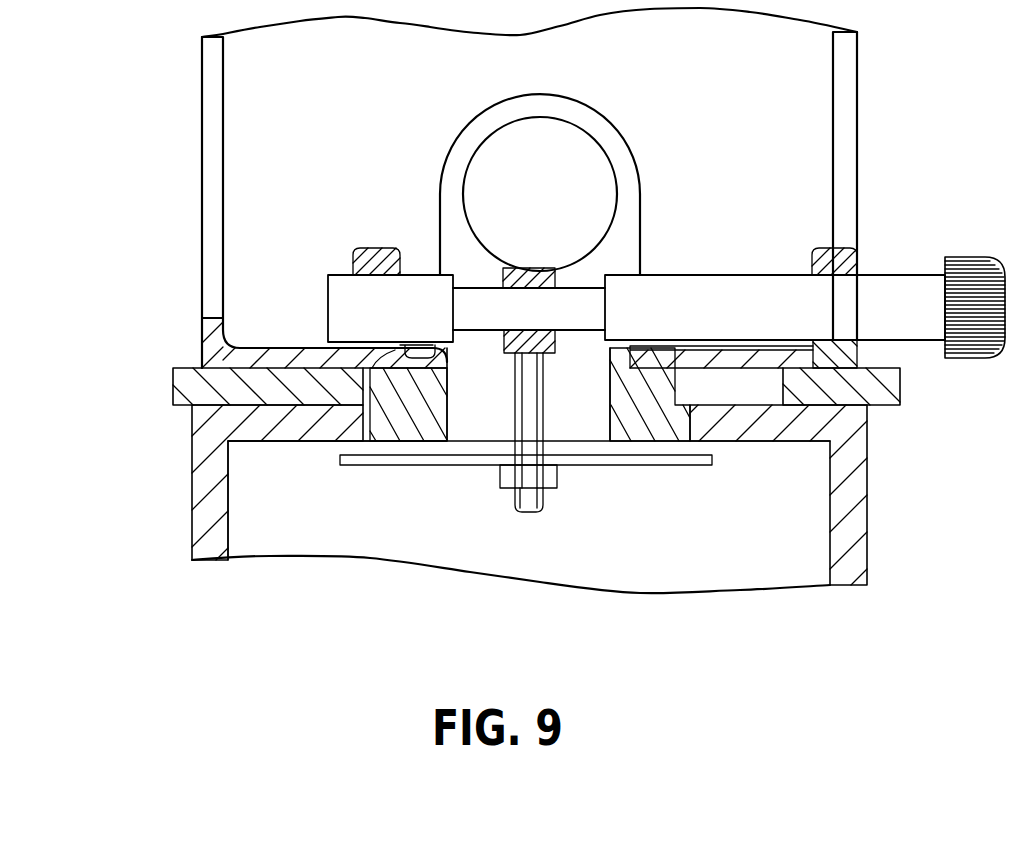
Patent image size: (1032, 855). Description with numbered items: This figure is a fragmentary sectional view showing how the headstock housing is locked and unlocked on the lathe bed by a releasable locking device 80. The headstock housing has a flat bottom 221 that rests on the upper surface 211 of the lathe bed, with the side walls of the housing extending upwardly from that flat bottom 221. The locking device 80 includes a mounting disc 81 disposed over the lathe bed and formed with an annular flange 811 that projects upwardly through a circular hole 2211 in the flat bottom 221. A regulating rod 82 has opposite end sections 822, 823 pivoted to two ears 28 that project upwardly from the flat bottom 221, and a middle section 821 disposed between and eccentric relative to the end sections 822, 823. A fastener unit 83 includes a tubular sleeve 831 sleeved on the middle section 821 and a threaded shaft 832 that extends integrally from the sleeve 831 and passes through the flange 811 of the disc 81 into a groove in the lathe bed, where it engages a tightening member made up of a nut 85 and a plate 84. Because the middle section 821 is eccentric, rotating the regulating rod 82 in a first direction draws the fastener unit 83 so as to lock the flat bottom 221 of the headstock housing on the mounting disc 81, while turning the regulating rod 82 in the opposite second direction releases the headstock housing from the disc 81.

The releasable locking device 80 is at (188, 366).
The mounting disc 81 is at (312, 398).
The regulating rod 82 is at (737, 283).
The fastener unit 83 is at (485, 275).
The plate 84 is at (580, 463).
The nut 85 is at (507, 473).
The ears 28 is at (383, 253).
The upper surface 211 is at (270, 445).
The flat bottom 221 is at (280, 357).
The circular hole 2211 is at (385, 362).
The annular flange 811 is at (410, 392).
The middle section 821 is at (587, 300).
The end section 822 is at (350, 307).
The end section 823 is at (777, 300).
The tubular sleeve 831 is at (537, 277).
The threaded shaft 832 is at (545, 378).